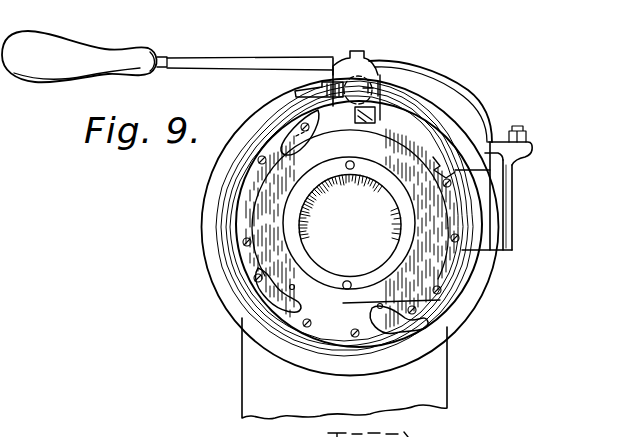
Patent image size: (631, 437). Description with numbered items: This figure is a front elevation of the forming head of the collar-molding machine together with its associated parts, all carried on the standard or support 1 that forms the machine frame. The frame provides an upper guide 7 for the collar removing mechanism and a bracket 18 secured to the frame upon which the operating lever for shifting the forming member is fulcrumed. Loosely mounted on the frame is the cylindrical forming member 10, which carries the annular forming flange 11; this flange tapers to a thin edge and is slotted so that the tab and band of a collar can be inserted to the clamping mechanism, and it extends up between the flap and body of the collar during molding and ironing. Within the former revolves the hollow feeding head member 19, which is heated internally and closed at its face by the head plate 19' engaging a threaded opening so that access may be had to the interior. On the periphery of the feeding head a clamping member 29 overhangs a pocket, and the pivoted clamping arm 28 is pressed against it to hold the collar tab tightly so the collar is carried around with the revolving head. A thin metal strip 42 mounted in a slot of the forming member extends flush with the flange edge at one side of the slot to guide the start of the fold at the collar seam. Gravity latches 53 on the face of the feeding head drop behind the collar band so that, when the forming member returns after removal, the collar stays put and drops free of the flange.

The standard or support 1 is at (240, 391).
The upper guide 7 is at (481, 118).
The cylindrical forming member 10 is at (468, 302).
The forming flange 11 is at (234, 209).
The bracket 18 is at (506, 200).
The feeding head member 19 is at (383, 218).
The head plate 19' is at (312, 229).
The clamping arm 28 is at (364, 124).
The clamping member 29 is at (380, 118).
The strip 42 is at (330, 71).
The gravity latches 53 is at (283, 304).